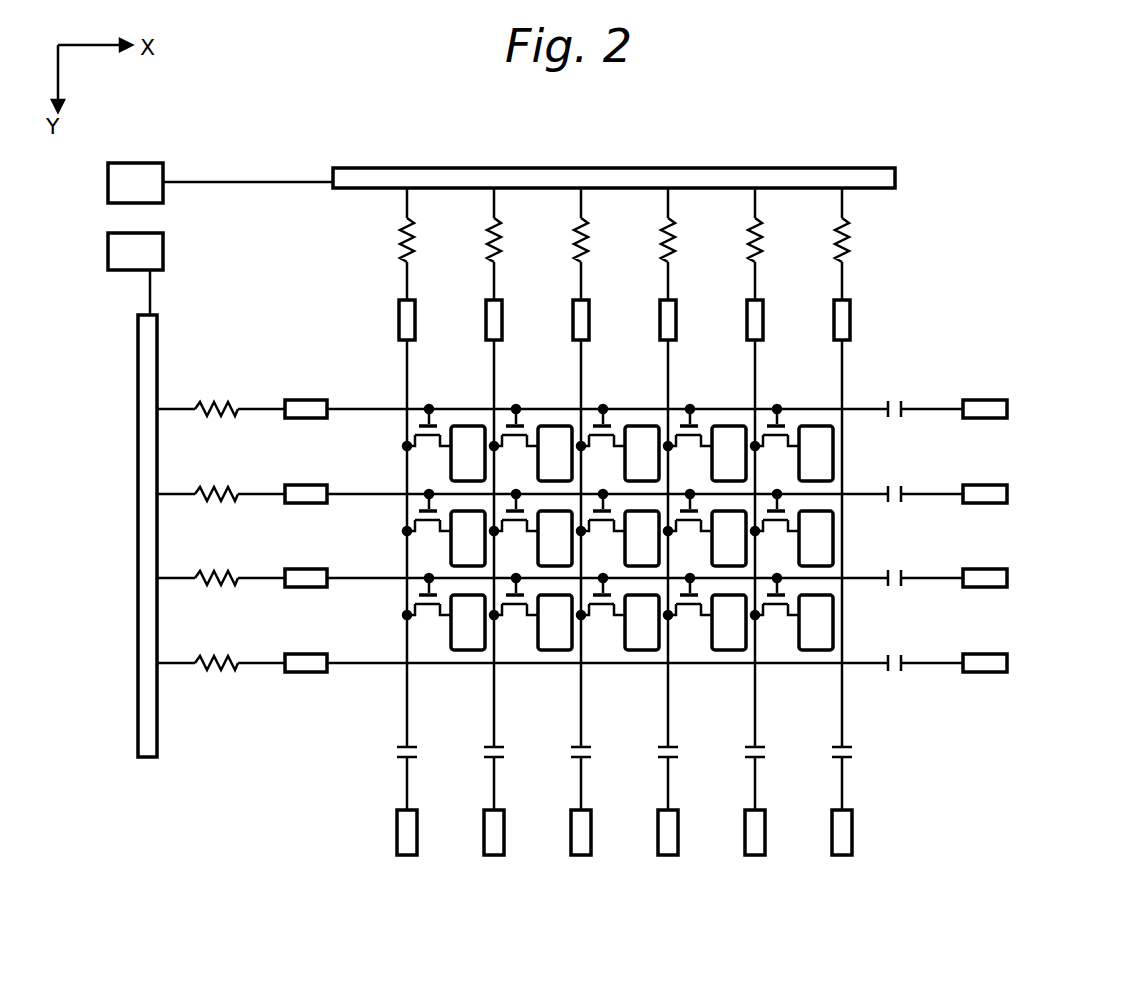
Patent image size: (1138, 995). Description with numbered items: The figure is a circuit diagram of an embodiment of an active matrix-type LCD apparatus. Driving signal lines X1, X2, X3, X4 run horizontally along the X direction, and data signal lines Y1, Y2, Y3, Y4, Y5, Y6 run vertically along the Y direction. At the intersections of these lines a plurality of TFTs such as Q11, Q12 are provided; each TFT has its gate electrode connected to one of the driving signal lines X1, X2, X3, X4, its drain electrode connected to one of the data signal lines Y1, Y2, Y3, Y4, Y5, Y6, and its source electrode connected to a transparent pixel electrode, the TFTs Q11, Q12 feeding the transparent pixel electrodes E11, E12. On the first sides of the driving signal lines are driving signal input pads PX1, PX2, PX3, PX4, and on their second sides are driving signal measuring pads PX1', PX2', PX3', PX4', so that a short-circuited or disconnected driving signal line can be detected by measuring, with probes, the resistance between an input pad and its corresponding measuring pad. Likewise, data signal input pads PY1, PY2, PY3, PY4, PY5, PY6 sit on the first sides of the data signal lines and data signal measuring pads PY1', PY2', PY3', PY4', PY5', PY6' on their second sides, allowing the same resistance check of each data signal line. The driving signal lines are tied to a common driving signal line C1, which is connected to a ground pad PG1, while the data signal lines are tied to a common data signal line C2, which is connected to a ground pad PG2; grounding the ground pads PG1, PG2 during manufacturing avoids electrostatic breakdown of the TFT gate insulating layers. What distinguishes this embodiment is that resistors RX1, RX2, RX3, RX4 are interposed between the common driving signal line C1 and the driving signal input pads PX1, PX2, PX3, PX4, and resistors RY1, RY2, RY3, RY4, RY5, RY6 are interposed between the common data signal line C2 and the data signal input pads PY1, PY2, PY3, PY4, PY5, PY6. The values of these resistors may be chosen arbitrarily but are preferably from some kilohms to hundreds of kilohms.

The ground pad PG2 is at (124, 172).
The ground pad PG1 is at (120, 270).
The common driving signal line C1 is at (138, 727).
The common data signal line C2 is at (545, 177).
The driving signal line X1 is at (367, 405).
The driving signal line X2 is at (367, 490).
The driving signal line X3 is at (367, 574).
The driving signal line X4 is at (367, 659).
The data signal line Y1 is at (407, 372).
The data signal line Y2 is at (494, 372).
The data signal line Y3 is at (581, 372).
The data signal line Y4 is at (668, 372).
The data signal line Y5 is at (755, 372).
The data signal line Y6 is at (842, 372).
The resistor RX1 is at (198, 402).
The resistor RX2 is at (198, 487).
The resistor RX3 is at (198, 571).
The resistor RX4 is at (198, 656).
The resistor RY1 is at (398, 228).
The resistor RY2 is at (485, 228).
The resistor RY3 is at (572, 228).
The resistor RY4 is at (659, 228).
The resistor RY5 is at (746, 228).
The resistor RY6 is at (833, 228).
The driving signal input pad PX1 is at (303, 432).
The driving signal input pad PX2 is at (303, 517).
The driving signal input pad PX3 is at (303, 601).
The driving signal input pad PX4 is at (303, 686).
The data signal input pad PY1 is at (376, 315).
The data signal input pad PY2 is at (463, 315).
The data signal input pad PY3 is at (550, 315).
The data signal input pad PY4 is at (637, 315).
The data signal input pad PY5 is at (724, 315).
The data signal input pad PY6 is at (811, 315).
The driving signal measuring pad PX1' is at (1022, 404).
The driving signal measuring pad PX2' is at (1022, 489).
The driving signal measuring pad PX3' is at (1022, 573).
The driving signal measuring pad PX4' is at (1022, 658).
The data signal measuring pad PY1' is at (387, 852).
The data signal measuring pad PY2' is at (474, 852).
The data signal measuring pad PY3' is at (561, 852).
The data signal measuring pad PY4' is at (648, 852).
The data signal measuring pad PY5' is at (735, 852).
The data signal measuring pad PY6' is at (822, 852).
The TFT Q11 is at (427, 443).
The TFT Q12 is at (514, 443).
The transparent pixel electrode E11 is at (468, 453).
The transparent pixel electrode E12 is at (555, 453).